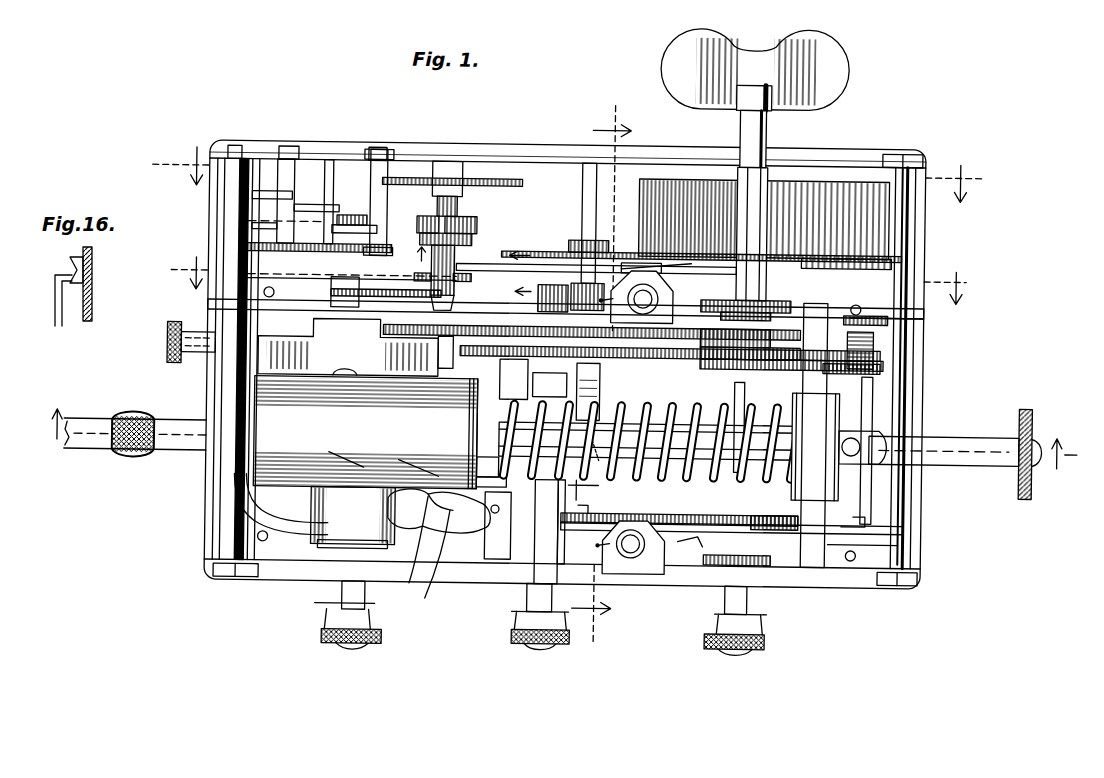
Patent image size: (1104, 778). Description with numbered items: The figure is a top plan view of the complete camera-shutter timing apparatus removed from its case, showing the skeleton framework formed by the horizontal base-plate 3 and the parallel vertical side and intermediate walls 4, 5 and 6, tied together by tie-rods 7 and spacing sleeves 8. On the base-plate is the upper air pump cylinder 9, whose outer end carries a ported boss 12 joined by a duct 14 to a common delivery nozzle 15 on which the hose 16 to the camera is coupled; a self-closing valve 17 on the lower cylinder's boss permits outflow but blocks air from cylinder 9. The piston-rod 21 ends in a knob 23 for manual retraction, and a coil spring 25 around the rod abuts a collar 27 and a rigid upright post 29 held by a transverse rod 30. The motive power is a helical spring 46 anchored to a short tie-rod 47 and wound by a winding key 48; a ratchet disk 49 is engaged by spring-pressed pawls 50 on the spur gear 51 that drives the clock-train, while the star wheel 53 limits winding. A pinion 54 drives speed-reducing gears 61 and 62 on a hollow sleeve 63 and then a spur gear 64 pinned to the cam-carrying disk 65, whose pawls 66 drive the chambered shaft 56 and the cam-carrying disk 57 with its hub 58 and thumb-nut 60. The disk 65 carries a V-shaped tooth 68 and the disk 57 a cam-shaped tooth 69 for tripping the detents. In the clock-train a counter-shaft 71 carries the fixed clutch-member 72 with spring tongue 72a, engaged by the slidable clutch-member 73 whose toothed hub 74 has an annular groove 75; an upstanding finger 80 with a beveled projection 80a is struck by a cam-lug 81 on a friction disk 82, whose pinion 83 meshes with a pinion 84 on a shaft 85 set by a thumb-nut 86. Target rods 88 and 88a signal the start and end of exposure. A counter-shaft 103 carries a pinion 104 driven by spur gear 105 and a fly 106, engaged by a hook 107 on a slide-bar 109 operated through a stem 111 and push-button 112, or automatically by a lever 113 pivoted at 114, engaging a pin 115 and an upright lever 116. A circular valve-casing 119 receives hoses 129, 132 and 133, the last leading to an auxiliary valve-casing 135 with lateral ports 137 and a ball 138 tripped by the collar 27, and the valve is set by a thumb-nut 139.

In FIG. 1, the base-plate 3 is at (510, 150).
In FIG. 1, the side wall 4 is at (450, 520).
In FIG. 1, the side wall 5 is at (552, 137).
In FIG. 1, the intermediate wall 6 is at (290, 300).
In FIG. 1, the tie-rods 7 is at (569, 280).
In FIG. 1, the spacing sleeves 8 is at (226, 370).
In FIG. 1, the upper air pump cylinder 9 is at (441, 376).
In FIG. 1, the ported boss 12 is at (192, 403).
In FIG. 1, the duct 14 is at (500, 600).
In FIG. 1, the delivery nozzle 15 is at (182, 452).
In FIG. 1, the hose 16 is at (93, 424).
In FIG. 1, the self-closing valve 17 is at (460, 258).
In FIG. 1, the piston-rod 21 is at (930, 434).
In FIG. 1, the knob 23 is at (1020, 409).
In FIG. 1, the coil spring 25 is at (652, 455).
In FIG. 1, the collar 27 is at (478, 420).
In FIG. 1, the upright post 29 is at (839, 435).
In FIG. 1, the transverse rod 30 is at (900, 541).
In FIG. 1, the helical spring 46 is at (780, 190).
In FIG. 1, the tie-rod 47 is at (918, 264).
In FIG. 1, the winding key 48 is at (830, 70).
In FIG. 1, the ratchet disk 49 is at (810, 268).
In FIG. 1, the spring-pressed pawls 50 is at (628, 262).
In FIG. 1, the spur gear 51 is at (745, 268).
In FIG. 1, the star wheel 53 is at (840, 310).
In FIG. 1, the pinion 54 is at (925, 314).
In FIG. 1, the chambered shaft 56 is at (735, 388).
In FIG. 1, the cam-carrying disk 57 is at (772, 528).
In FIG. 1, the hub 58 is at (730, 543).
In FIG. 1, the thumb-nut 60 is at (768, 640).
In FIG. 1, the speed-reducing gear 61 is at (676, 322).
In FIG. 1, the speed-reducing gear 62 is at (533, 385).
In FIG. 1, the hollow shaft or sleeve 63 is at (533, 400).
In FIG. 1, the spur gear 64 is at (768, 345).
In FIG. 1, the cam-carrying disk 65 is at (882, 366).
In FIG. 1, the spring-pressed pawls 66 is at (655, 420).
In FIG. 1, the V-shaped tooth 68 is at (872, 390).
In FIG. 1, the cam-shaped tooth 69 is at (870, 520).
In FIG. 1, the counter-shaft 71 is at (445, 163).
In FIG. 1, the fixed clutch-member 72 is at (472, 224).
In FIG. 1, the spring tongue 72a is at (470, 242).
In FIG. 1, the slidable clutch-member 73 is at (418, 236).
In FIG. 1, the toothed hub 74 is at (430, 270).
In FIG. 1, the annular groove 75 is at (425, 290).
In FIG. 16, the upstanding finger 80 is at (54, 301).
In FIG. 16, the beveled lateral projection 80a is at (68, 274).
In FIG. 16, the cam-lug 81 is at (74, 257).
In FIG. 1, the cam-lug 81 is at (560, 280).
In FIG. 1, the friction disk 82 is at (572, 250).
In FIG. 1, the pinion 83 is at (620, 262).
In FIG. 1, the pinion 84 is at (537, 308).
In FIG. 1, the shaft 85 is at (550, 604).
In FIG. 1, the thumb-nut 86 is at (514, 636).
In FIG. 1, the target rod 88 is at (660, 275).
In FIG. 1, the target rod 88a is at (636, 556).
In FIG. 1, the counter-shaft 103 is at (350, 268).
In FIG. 1, the pinion 104 is at (338, 290).
In FIG. 1, the spur gear 105 is at (372, 284).
In FIG. 1, the fly 106 is at (352, 345).
In FIG. 1, the hook 107 is at (443, 370).
In FIG. 1, the slide-bar 109 is at (600, 380).
In FIG. 1, the horizontal stem 111 is at (190, 335).
In FIG. 1, the push-button 112 is at (166, 338).
In FIG. 1, the lever 113 is at (590, 494).
In FIG. 1, the pivot 114 is at (600, 440).
In FIG. 1, the pin 115 is at (566, 358).
In FIG. 1, the upright lever 116 is at (597, 520).
In FIG. 1, the circular valve-casing 119 is at (352, 517).
In FIG. 1, the hose 129 is at (245, 505).
In FIG. 1, the hose 132 is at (425, 505).
In FIG. 1, the hose 133 is at (370, 484).
In FIG. 1, the auxiliary valve-casing 135 is at (492, 562).
In FIG. 1, the lateral ports 137 is at (465, 530).
In FIG. 1, the ball 138 is at (452, 476).
In FIG. 1, the thumb-nut 139 is at (320, 636).